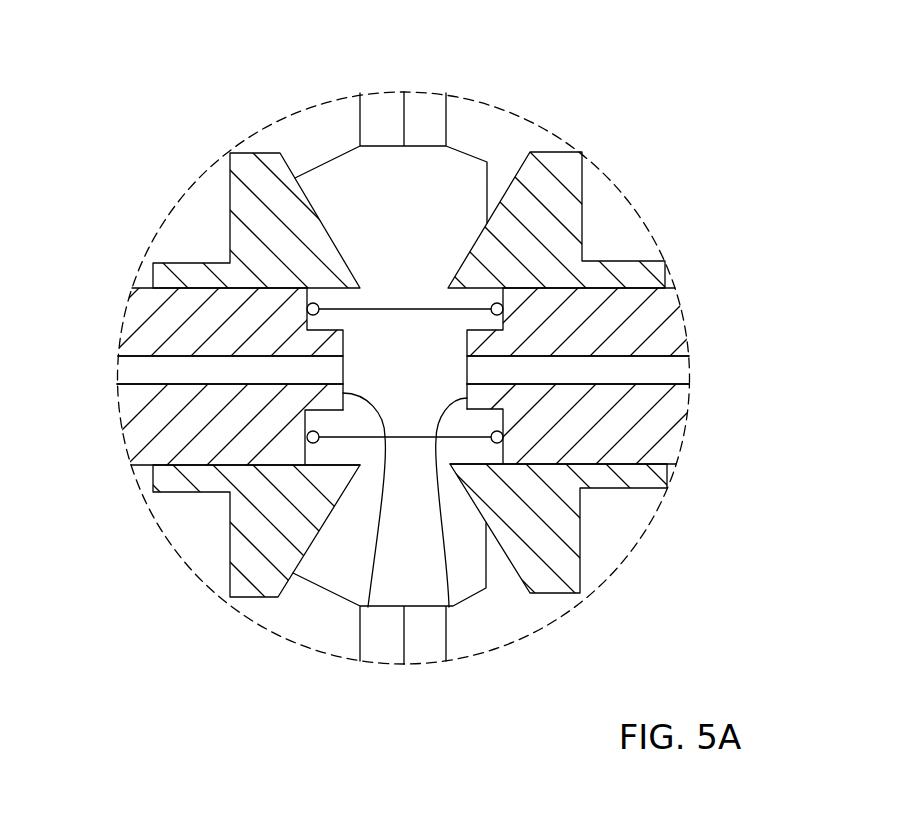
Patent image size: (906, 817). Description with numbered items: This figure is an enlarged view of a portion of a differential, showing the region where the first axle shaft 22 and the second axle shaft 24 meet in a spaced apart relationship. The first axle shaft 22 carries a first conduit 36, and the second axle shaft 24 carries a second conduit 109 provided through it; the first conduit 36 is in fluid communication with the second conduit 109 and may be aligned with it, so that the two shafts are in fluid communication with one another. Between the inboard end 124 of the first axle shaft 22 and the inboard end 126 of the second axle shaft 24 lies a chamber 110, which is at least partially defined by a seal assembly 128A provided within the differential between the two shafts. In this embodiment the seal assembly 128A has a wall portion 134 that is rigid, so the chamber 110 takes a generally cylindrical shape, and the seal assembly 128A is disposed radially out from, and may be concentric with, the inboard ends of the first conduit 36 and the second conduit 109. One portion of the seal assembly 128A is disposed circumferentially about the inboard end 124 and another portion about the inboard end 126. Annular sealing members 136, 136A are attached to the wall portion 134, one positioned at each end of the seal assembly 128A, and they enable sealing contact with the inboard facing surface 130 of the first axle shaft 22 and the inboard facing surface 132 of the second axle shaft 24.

The first axle shaft 22 is at (137, 332).
The second axle shaft 24 is at (668, 410).
The first conduit 36 is at (138, 373).
The second conduit 109 is at (668, 370).
The chamber 110 is at (405, 373).
The inboard end of the first axle shaft 124 is at (368, 607).
The inboard end of the second axle shaft 126 is at (449, 607).
The seal assembly 128A is at (412, 440).
The inboard facing surface of the first axle shaft 130 is at (314, 443).
The inboard facing surface of the second axle shaft 132 is at (497, 445).
The wall portion 134 is at (413, 303).
The annular sealing member 136 is at (313, 303).
The annular sealing member 136A is at (493, 303).